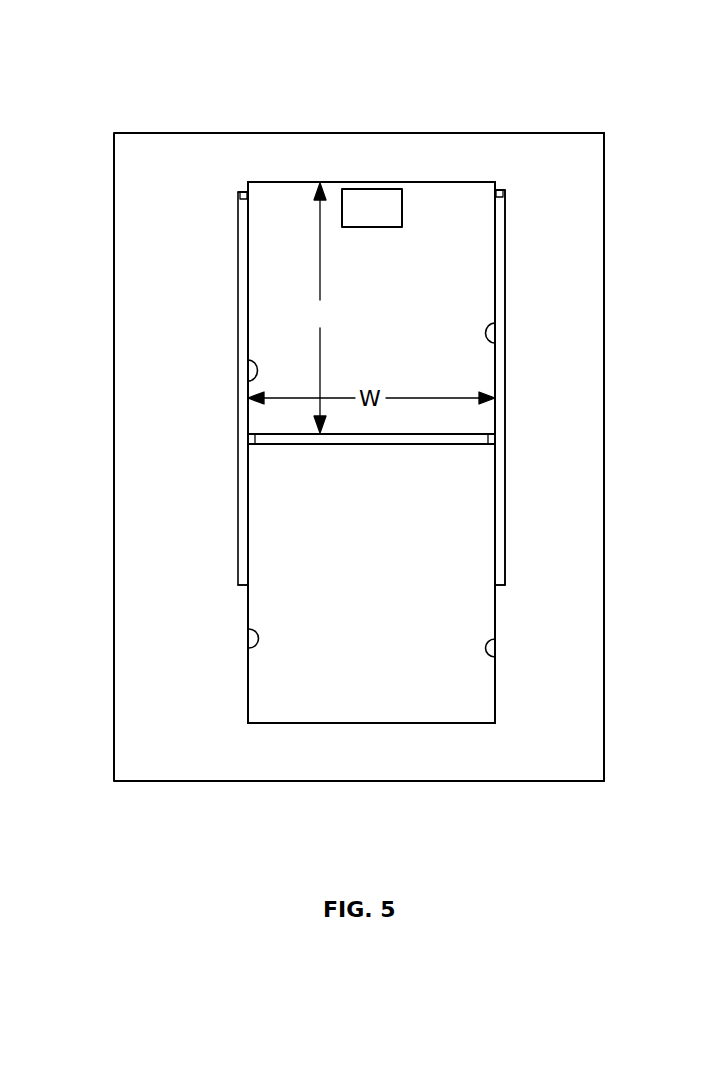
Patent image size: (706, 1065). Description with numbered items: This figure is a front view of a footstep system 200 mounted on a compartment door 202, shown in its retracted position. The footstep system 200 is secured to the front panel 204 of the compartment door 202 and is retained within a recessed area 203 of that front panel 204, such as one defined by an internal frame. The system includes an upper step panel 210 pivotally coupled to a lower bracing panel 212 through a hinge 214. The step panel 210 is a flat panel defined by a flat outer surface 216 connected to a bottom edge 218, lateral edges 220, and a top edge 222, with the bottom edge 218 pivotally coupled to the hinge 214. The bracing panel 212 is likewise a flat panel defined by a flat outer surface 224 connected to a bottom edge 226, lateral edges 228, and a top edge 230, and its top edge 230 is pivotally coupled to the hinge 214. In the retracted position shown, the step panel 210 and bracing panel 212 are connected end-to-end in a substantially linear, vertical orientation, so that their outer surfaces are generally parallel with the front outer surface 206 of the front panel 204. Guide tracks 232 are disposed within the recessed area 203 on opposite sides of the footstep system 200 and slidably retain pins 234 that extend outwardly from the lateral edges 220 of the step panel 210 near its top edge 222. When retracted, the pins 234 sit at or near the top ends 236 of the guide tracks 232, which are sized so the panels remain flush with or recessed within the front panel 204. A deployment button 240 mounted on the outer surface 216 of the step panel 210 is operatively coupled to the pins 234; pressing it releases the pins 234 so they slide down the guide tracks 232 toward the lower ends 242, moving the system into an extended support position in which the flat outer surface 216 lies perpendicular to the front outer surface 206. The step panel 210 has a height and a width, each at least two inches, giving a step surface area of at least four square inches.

The footstep system 200 is at (450, 275).
The compartment door 202 is at (183, 758).
The recessed area 203 is at (505, 240).
The front panel 204 is at (565, 573).
The front outer surface 206 is at (550, 705).
The upper step panel 210 is at (457, 318).
The lower bracing panel 212 is at (452, 522).
The hinge 214 is at (450, 437).
The flat outer surface 216 is at (315, 283).
The bottom edge 218 is at (308, 433).
The lateral edges 220 is at (253, 383).
The top edge 222 is at (417, 180).
The flat outer surface 224 is at (455, 553).
The bottom edge 226 is at (367, 723).
The lateral edges 228 is at (245, 650).
The top edge 230 is at (430, 445).
The guide tracks 232 is at (237, 220).
The pins 234 is at (237, 193).
The top ends 236 is at (243, 192).
The deployment button 240 is at (353, 205).
The lower ends 242 is at (242, 587).